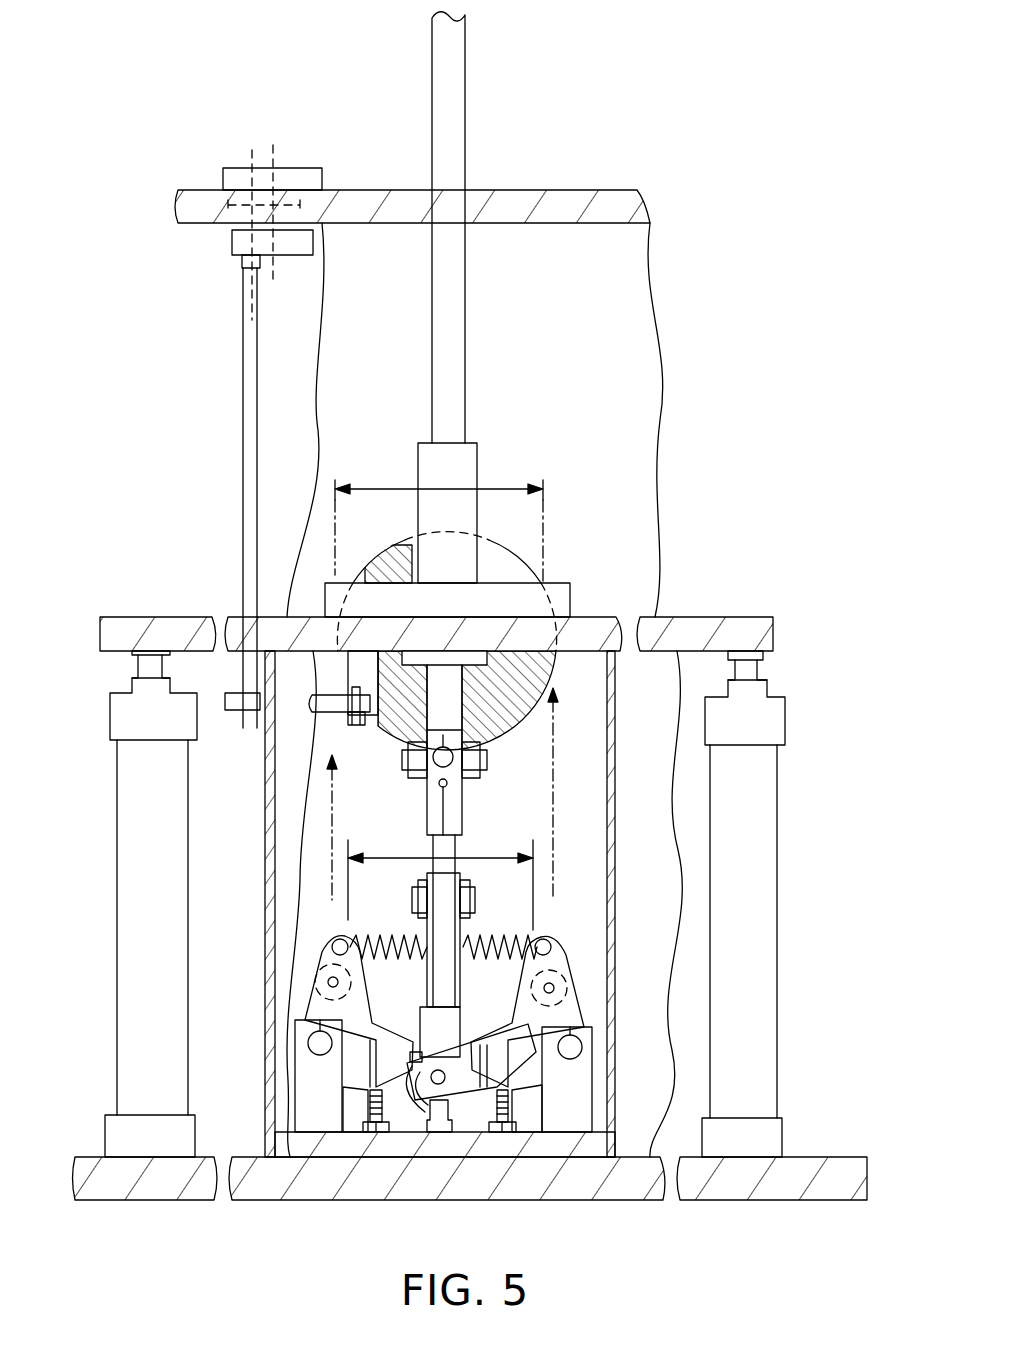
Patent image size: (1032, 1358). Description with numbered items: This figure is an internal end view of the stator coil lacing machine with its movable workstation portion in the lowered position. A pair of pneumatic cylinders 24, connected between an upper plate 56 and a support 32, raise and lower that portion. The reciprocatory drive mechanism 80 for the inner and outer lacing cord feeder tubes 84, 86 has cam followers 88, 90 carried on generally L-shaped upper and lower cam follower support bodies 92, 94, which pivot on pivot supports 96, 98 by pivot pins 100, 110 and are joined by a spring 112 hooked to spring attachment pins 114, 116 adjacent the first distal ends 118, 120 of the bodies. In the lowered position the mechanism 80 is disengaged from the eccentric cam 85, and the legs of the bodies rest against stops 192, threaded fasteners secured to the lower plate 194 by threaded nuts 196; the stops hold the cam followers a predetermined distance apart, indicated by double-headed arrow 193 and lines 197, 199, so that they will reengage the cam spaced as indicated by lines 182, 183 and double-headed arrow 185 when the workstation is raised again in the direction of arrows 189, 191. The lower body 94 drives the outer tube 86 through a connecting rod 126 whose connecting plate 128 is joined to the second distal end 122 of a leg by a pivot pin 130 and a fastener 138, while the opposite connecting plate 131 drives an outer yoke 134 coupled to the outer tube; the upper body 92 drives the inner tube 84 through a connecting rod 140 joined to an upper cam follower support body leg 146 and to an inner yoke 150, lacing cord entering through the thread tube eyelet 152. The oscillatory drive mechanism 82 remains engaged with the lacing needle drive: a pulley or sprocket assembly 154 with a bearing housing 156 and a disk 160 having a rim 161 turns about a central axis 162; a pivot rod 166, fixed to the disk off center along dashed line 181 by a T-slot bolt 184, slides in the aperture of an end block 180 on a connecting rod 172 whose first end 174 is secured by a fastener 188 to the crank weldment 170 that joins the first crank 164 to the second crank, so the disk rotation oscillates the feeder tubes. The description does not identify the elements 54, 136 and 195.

The pneumatic cylinders 24 is at (130, 1062).
The support 32 is at (852, 1188).
The mounting cylinder 54 is at (572, 604).
The upper plate 56 is at (760, 641).
The reciprocatory drive mechanism 80 is at (587, 958).
The oscillatory drive mechanism 82 is at (240, 712).
The inner lacing cord feeder tube 84 is at (458, 852).
The eccentric cam 85 is at (518, 575).
The outer lacing cord feeder tube 86 is at (452, 694).
The cam follower 88 is at (365, 985).
The cam follower 90 is at (520, 988).
The upper cam follower support body 92 is at (304, 1002).
The lower cam follower support body 94 is at (594, 1006).
The pivot support 96 is at (300, 1100).
The pivot support 98 is at (596, 1105).
The pivot pin 100 is at (312, 1050).
The pivot pin 110 is at (598, 1055).
The spring 112 is at (472, 950).
The spring attachment pin 114 is at (333, 943).
The spring attachment pin 116 is at (575, 945).
The first distal end 118 is at (330, 938).
The first distal end 120 is at (548, 936).
The second distal end 122 is at (445, 1099).
The connecting rod 126 is at (440, 972).
The connecting plate 128 is at (420, 1020).
The pivot pin 130 is at (446, 1071).
The connecting plate 131 is at (453, 818).
The outer yoke 134 is at (487, 762).
The ball joint 136 is at (440, 768).
The fastener 138 is at (447, 1134).
The connecting rod 140 is at (461, 884).
The upper cam follower support body leg 146 is at (348, 1142).
The inner yoke 150 is at (412, 900).
The thread tube eyelet 152 is at (505, 1134).
The pulley or sprocket assembly 154 is at (236, 166).
The bearing housing 156 is at (322, 178).
The disk 160 is at (232, 245).
The rim 161 is at (232, 237).
The central axis 162 is at (273, 147).
The first crank 164 is at (339, 713).
The pivot rod 166 is at (243, 338).
The crank weldment 170 is at (362, 668).
The connecting rod 172 is at (288, 722).
The first end 174 is at (406, 770).
The end block 180 is at (225, 700).
The dashed line 181 is at (252, 152).
The line 182 is at (312, 537).
The line 183 is at (546, 545).
The T-slot bolt 184 is at (246, 266).
The double-headed arrow 185 is at (518, 483).
The fastener 188 is at (357, 727).
The arrow 189 is at (325, 800).
The arrow 191 is at (555, 705).
The stops 192 is at (386, 1134).
The double-headed arrow 193 is at (368, 846).
The lower plate 194 is at (288, 1146).
The post 195 is at (398, 1132).
The threaded nuts 196 is at (368, 1134).
The line 197 is at (320, 893).
The line 199 is at (535, 893).